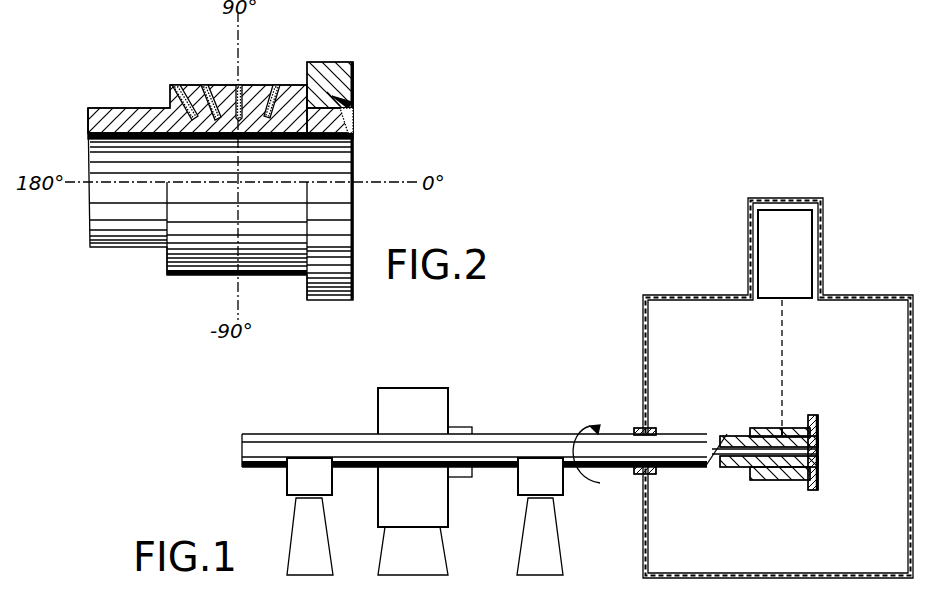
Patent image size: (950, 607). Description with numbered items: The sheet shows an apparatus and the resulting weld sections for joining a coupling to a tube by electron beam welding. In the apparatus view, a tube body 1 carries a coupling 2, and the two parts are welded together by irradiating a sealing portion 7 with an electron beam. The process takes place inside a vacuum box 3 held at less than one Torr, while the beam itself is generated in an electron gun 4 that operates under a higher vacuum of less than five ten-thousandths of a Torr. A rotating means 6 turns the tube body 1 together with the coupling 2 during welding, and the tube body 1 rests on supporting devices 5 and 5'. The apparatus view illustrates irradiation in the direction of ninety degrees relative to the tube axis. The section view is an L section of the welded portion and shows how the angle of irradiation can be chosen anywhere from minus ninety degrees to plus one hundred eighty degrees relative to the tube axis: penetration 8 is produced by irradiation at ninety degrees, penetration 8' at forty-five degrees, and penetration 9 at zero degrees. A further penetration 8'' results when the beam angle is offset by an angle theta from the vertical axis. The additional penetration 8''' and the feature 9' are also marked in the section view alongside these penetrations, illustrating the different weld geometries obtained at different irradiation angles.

In FIG. 2, the tube body 1 is at (95, 116).
In FIG. 1, the tube body 1 is at (690, 460).
In FIG. 1, the coupling 2 is at (820, 426).
In FIG. 1, the vacuum box 3 is at (643, 344).
In FIG. 1, the electron gun 4 is at (806, 248).
In FIG. 1, the supporting device 5 is at (523, 516).
In FIG. 1, the supporting device 5' is at (291, 516).
In FIG. 1, the rotating means 6 is at (422, 398).
In FIG. 1, the sealing portion 7 is at (770, 432).
In FIG. 2, the penetration 8 is at (249, 85).
In FIG. 2, the penetration 8' is at (279, 84).
In FIG. 2, the penetration 8'' is at (203, 84).
In FIG. 2, the slot 8''' is at (162, 97).
In FIG. 2, the penetration 9 is at (346, 97).
In FIG. 2, the flange lip 9' is at (367, 124).